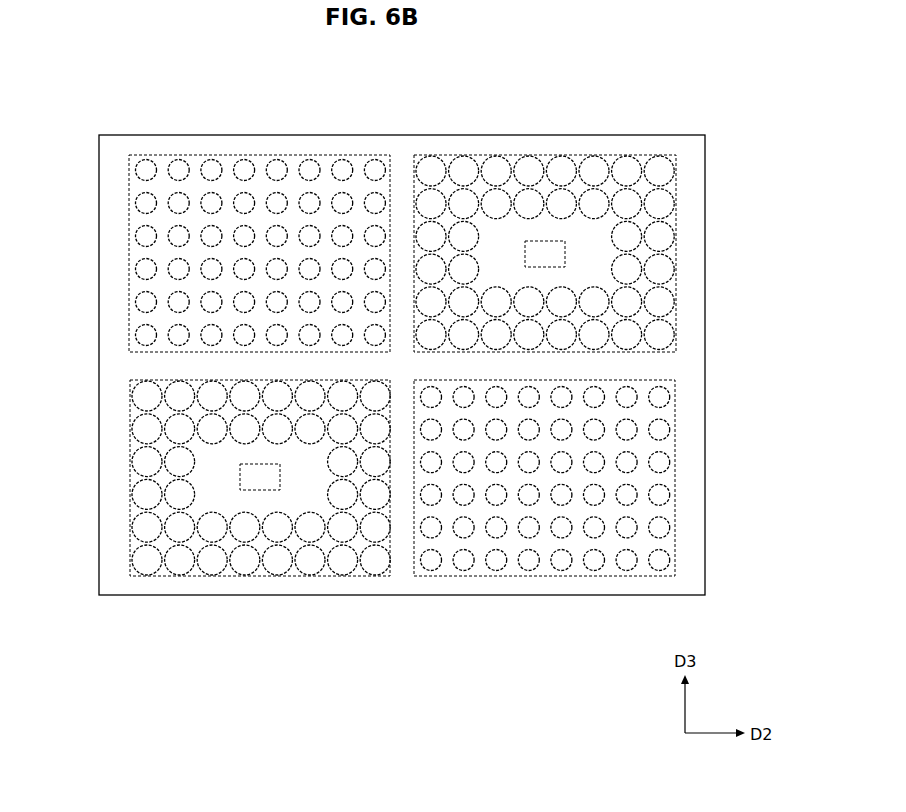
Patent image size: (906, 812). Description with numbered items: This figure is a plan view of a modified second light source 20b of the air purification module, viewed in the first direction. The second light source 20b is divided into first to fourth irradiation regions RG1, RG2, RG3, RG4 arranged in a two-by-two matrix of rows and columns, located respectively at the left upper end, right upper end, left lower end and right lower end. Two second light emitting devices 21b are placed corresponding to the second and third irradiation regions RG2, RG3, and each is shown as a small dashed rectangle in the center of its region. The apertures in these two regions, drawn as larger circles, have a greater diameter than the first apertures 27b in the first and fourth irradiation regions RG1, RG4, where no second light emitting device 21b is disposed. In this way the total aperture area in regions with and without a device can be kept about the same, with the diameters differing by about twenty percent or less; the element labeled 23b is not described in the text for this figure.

The second light source 20b is at (707, 543).
The second light emitting device 21b is at (557, 253).
The first connection terminals 23b is at (688, 333).
The first apertures 27b is at (662, 394).
The first irradiation region RG1 is at (250, 152).
The second irradiation region RG2 is at (531, 152).
The third irradiation region RG3 is at (251, 576).
The fourth irradiation region RG4 is at (538, 576).